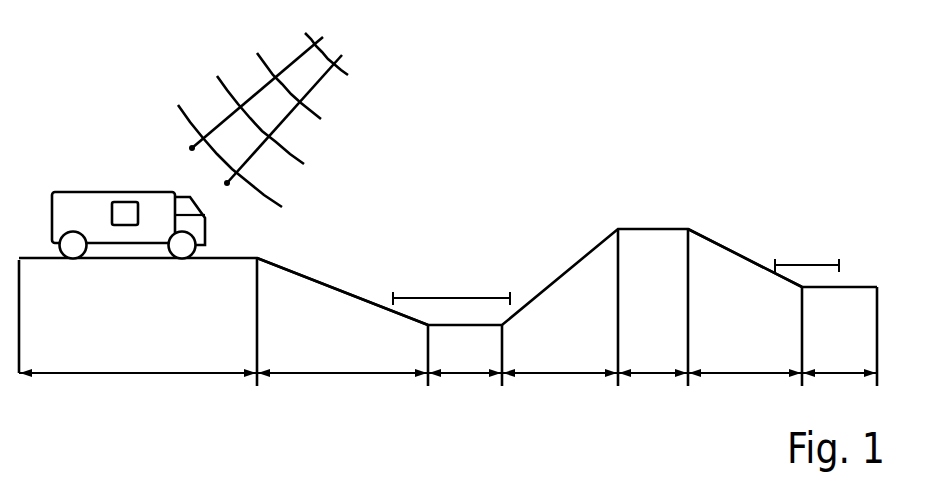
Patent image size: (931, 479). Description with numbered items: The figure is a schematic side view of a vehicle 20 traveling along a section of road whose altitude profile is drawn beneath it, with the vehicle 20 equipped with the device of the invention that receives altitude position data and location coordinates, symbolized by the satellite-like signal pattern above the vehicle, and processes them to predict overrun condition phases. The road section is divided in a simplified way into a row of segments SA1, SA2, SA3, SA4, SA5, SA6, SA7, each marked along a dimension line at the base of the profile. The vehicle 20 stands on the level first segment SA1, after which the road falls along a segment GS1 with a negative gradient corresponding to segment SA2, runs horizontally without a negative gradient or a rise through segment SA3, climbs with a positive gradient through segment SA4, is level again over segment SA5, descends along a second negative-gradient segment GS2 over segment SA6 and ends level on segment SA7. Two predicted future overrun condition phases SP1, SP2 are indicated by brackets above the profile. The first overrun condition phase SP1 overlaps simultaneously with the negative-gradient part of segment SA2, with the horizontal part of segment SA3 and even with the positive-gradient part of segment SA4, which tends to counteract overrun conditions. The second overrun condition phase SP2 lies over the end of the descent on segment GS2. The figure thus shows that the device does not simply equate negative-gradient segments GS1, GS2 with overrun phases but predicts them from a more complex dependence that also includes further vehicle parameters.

The vehicle 20 is at (82, 207).
The section-of-road segment with negative gradient GS1 is at (330, 288).
The section-of-road segment with negative gradient GS2 is at (748, 260).
The first overrun condition phase SP1 is at (451, 288).
The second overrun condition phase SP2 is at (807, 254).
The segment of the section of road SA1 is at (138, 322).
The segment of the section of road SA2 is at (342, 355).
The segment of the section of road SA3 is at (465, 355).
The segment of the section of road SA4 is at (560, 307).
The segment of the section of road SA5 is at (653, 307).
The segment of the section of road SA6 is at (745, 336).
The segment of the section of road SA7 is at (839, 336).